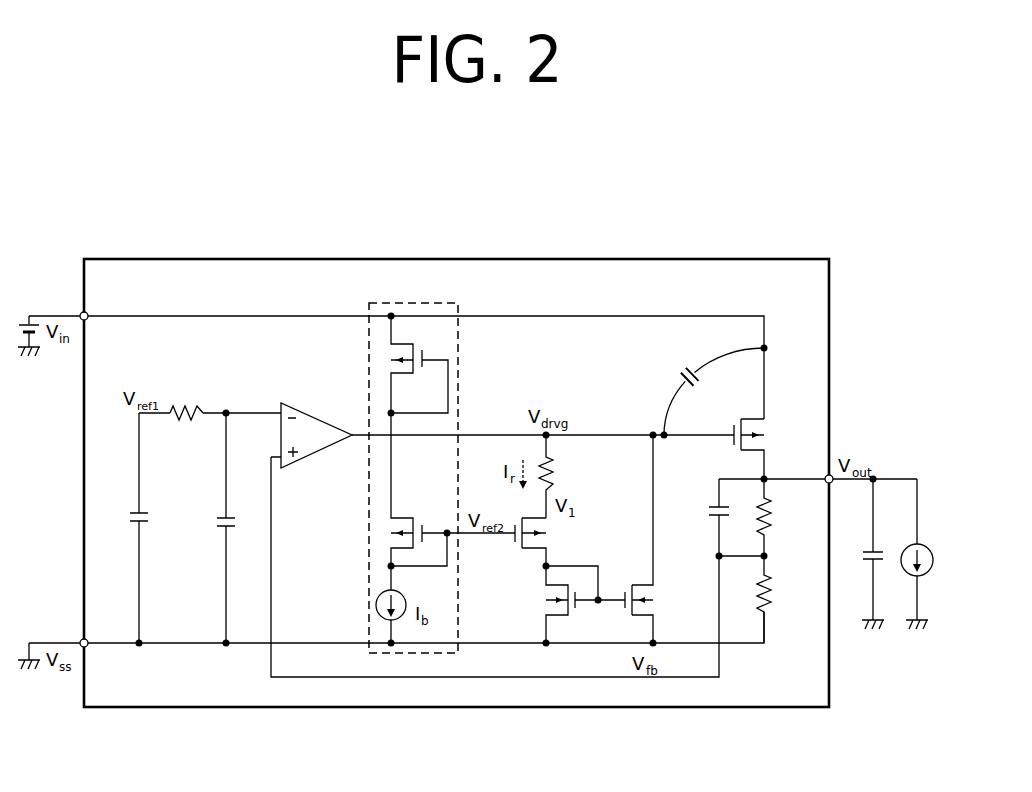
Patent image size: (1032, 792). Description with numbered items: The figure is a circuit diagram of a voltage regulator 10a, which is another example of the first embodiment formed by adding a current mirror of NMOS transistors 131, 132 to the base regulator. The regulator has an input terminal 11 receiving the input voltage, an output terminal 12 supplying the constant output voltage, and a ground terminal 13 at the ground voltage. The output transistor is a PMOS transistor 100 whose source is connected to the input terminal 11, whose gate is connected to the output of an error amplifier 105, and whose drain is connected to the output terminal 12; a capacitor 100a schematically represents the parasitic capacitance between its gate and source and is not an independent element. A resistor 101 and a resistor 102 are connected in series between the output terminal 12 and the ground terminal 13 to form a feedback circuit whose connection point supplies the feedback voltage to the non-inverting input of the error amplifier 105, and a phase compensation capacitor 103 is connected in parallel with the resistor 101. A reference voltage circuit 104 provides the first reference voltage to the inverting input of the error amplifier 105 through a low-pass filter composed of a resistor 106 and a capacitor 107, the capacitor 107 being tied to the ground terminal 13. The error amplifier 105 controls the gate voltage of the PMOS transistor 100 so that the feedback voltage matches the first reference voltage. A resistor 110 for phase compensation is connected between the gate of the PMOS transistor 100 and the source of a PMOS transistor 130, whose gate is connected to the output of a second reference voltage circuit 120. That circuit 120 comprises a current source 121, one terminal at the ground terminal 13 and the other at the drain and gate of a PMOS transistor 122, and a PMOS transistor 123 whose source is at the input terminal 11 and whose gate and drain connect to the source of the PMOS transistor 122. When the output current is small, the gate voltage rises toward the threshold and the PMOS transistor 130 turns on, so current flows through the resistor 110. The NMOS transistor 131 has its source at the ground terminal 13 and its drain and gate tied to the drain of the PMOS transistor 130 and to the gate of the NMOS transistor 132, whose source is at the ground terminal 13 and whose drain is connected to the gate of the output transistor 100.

The voltage regulator 10a is at (830, 259).
The input terminal 11 is at (81, 314).
The output terminal 12 is at (832, 483).
The ground terminal 13 is at (81, 642).
The PMOS transistor 100 is at (762, 418).
The capacitor 100a is at (687, 372).
The resistor 101 is at (768, 529).
The resistor 102 is at (768, 604).
The phase compensation capacitor 103 is at (711, 504).
The reference voltage circuit 104 is at (134, 511).
The error amplifier 105 is at (298, 410).
The resistor 106 is at (186, 410).
The capacitor 107 is at (220, 516).
The resistor 110 is at (549, 462).
The reference voltage circuit 120 is at (456, 374).
The current source 121 is at (428, 590).
The PMOS transistor 122 is at (403, 520).
The PMOS transistor 123 is at (405, 376).
The PMOS transistor 130 is at (535, 550).
The NMOS transistor 131 is at (543, 598).
The NMOS transistor 132 is at (652, 597).